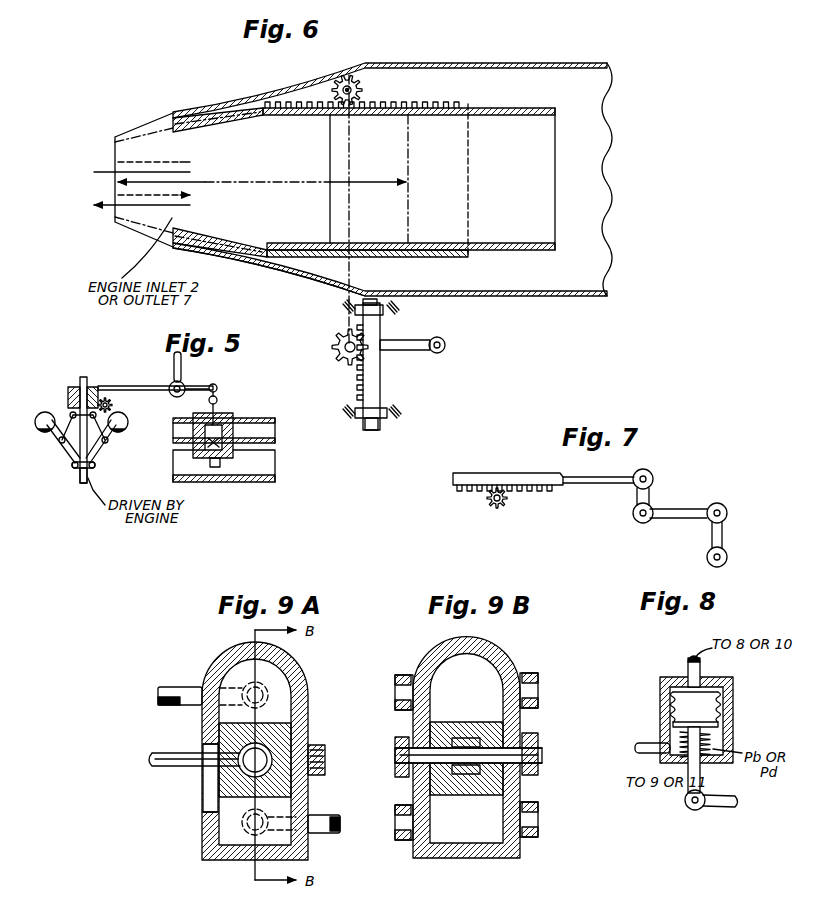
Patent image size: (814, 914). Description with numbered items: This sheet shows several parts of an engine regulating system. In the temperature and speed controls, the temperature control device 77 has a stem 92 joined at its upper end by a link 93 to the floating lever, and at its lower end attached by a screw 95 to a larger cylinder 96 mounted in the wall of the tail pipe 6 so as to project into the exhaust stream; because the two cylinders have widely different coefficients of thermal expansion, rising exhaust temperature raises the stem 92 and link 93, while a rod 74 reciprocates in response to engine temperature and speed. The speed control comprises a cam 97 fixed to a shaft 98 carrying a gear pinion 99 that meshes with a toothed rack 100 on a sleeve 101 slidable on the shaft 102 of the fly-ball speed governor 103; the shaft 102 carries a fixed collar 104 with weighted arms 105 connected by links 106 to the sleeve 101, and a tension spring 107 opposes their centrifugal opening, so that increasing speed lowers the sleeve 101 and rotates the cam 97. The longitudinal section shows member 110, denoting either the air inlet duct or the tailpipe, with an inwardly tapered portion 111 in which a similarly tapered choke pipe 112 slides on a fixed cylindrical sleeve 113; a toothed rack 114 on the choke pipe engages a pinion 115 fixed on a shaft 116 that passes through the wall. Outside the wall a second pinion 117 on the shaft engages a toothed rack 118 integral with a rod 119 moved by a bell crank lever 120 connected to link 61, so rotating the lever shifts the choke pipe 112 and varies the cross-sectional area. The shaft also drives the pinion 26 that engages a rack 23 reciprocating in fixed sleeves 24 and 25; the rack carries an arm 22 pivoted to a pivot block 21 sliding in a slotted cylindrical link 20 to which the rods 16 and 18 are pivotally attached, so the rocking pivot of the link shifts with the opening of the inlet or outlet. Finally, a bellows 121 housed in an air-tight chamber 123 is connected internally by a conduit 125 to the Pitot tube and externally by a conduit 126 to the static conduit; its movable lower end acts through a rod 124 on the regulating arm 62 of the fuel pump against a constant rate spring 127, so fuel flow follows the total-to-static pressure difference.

In FIG. 6, the member 110 is at (573, 279).
In FIG. 6, the inwardly tapered portion 111 is at (305, 281).
In FIG. 6, the choke pipe 112 is at (228, 241).
In FIG. 6, the fixed cylindrical sleeve 113 is at (497, 117).
In FIG. 6, the toothed rack 114 is at (400, 102).
In FIG. 6, the pinion 115 is at (358, 90).
In FIG. 6, the shaft 116 is at (352, 72).
In FIG. 7, the shaft 116 is at (508, 504).
In FIG. 6, the arm 22 is at (420, 340).
In FIG. 9A, the arm 22 is at (172, 770).
In FIG. 9B, the arm 22 is at (500, 742).
In FIG. 6, the rack 23 is at (385, 312).
In FIG. 6, the fixed sleeve 24 is at (348, 312).
In FIG. 6, the fixed sleeve 25 is at (350, 420).
In FIG. 6, the pinion 26 is at (340, 352).
In FIG. 5, the shaft 102 is at (84, 484).
In FIG. 5, the sleeve 101 is at (73, 387).
In FIG. 5, the toothed rack 100 is at (90, 387).
In FIG. 5, the gear pinion 99 is at (106, 388).
In FIG. 5, the cam 97 is at (112, 402).
In FIG. 5, the shaft 98 is at (126, 423).
In FIG. 5, the weighted arms 105 is at (42, 413).
In FIG. 5, the links 106 is at (65, 410).
In FIG. 5, the fly-ball speed governor 103 is at (55, 447).
In FIG. 5, the fixed collar 104 is at (100, 456).
In FIG. 5, the tension spring 107 is at (72, 466).
In FIG. 5, the rod 74 is at (183, 376).
In FIG. 5, the temperature control device 77 is at (230, 379).
In FIG. 5, the link 93 is at (220, 394).
In FIG. 5, the stem 92 is at (230, 416).
In FIG. 5, the larger cylinder 96 is at (255, 433).
In FIG. 5, the tail pipe 6 is at (262, 469).
In FIG. 5, the screw 95 is at (222, 467).
In FIG. 7, the toothed rack 118 is at (462, 473).
In FIG. 7, the rod 119 is at (595, 477).
In FIG. 7, the bell crank lever 120 is at (680, 512).
In FIG. 7, the link 61 is at (722, 536).
In FIG. 7, the second pinion 117 is at (486, 504).
In FIG. 9A, the slotted cylindrical link 20 is at (427, 658).
In FIG. 9B, the slotted cylindrical link 20 is at (466, 747).
In FIG. 9A, the pivot block 21 is at (248, 738).
In FIG. 9B, the pivot block 21 is at (445, 723).
In FIG. 9A, the rod 16 is at (163, 687).
In FIG. 9B, the rod 16 is at (540, 680).
In FIG. 9A, the rod 18 is at (328, 835).
In FIG. 9B, the rod 18 is at (540, 812).
In FIG. 8, the bellows 121 is at (733, 720).
In FIG. 8, the conduit 125 is at (701, 670).
In FIG. 8, the air-tight chamber 123 is at (720, 712).
In FIG. 8, the constant rate spring 127 is at (712, 742).
In FIG. 8, the rod 124 is at (702, 783).
In FIG. 8, the regulating arm 62 is at (718, 807).
In FIG. 8, the conduit 126 is at (638, 770).